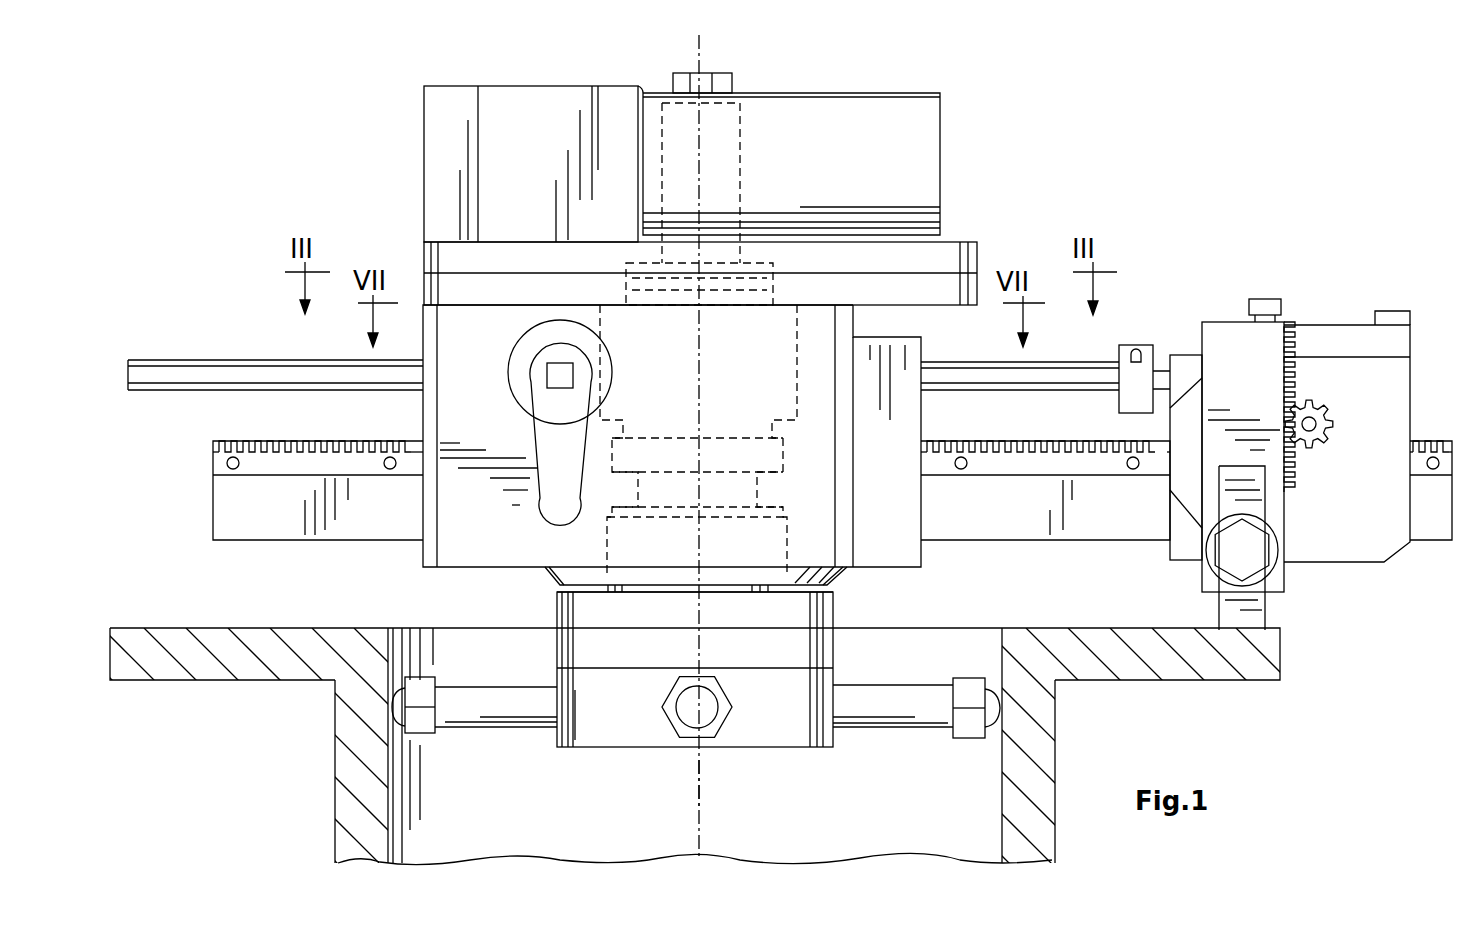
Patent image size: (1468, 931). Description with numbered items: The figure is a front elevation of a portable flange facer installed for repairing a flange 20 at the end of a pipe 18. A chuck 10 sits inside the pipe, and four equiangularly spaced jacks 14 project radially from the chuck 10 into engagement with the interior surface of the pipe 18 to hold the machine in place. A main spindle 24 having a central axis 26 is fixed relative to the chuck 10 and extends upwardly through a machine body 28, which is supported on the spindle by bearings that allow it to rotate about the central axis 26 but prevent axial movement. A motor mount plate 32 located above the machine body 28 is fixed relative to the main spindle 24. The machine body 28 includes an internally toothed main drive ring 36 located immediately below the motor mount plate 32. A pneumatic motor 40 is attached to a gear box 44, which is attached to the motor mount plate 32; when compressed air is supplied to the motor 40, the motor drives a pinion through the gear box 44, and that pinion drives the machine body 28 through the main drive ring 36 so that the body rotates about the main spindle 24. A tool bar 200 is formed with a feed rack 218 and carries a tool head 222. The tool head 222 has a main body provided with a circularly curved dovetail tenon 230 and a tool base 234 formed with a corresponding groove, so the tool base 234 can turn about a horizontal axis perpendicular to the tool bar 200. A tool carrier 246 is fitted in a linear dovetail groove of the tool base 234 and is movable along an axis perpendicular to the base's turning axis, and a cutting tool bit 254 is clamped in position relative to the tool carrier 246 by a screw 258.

The chuck 10 is at (787, 723).
The jacks 14 is at (490, 728).
The pipe 18 is at (335, 766).
The flange 20 is at (207, 628).
The main spindle 24 is at (757, 488).
The central axis 26 is at (697, 784).
The machine body 28 is at (405, 577).
The motor mount plate 32 is at (962, 252).
The main drive ring 36 is at (487, 296).
The pneumatic motor 40 is at (857, 120).
The gear box 44 is at (536, 105).
The tool bar 200 is at (228, 508).
The feed rack 218 is at (1023, 460).
The tool head 222 is at (1400, 368).
The circularly curved dovetail tenon 230 is at (1178, 490).
The tool base 234 is at (1365, 560).
The tool carrier 246 is at (1222, 330).
The cutting tool bit 254 is at (1245, 612).
The screw 258 is at (1250, 536).